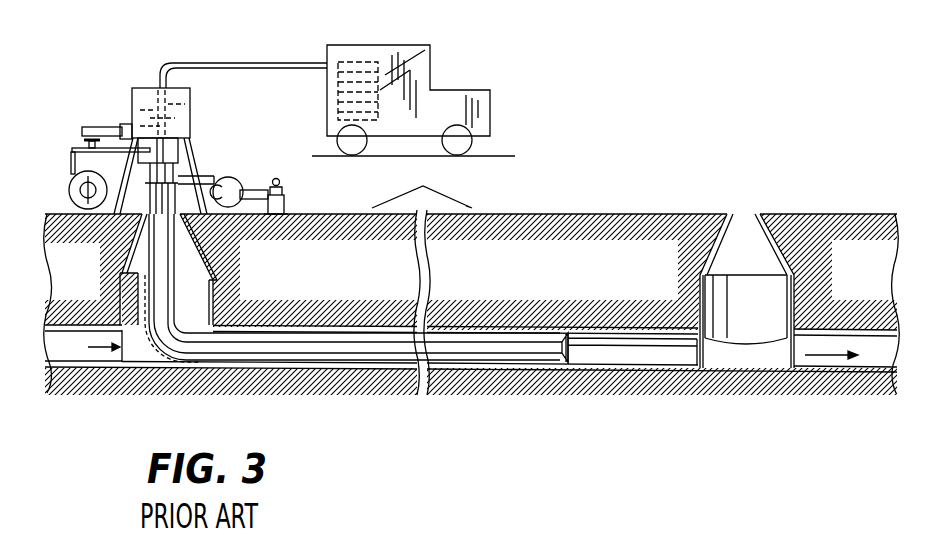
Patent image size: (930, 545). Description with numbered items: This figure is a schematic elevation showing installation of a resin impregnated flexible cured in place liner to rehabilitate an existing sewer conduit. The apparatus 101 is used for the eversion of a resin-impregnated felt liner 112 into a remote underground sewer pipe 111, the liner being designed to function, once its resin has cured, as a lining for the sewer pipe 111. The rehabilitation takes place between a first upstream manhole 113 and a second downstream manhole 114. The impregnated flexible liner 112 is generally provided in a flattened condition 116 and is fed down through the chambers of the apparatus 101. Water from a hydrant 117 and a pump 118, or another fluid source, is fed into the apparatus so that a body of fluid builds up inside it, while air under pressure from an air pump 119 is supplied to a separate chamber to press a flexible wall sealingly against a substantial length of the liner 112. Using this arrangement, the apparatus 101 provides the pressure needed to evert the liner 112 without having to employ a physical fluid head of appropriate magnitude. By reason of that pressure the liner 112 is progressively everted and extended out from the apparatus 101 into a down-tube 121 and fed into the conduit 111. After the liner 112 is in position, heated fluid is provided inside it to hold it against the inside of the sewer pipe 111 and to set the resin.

The apparatus 101 is at (131, 92).
The sewer pipe 111 is at (686, 376).
The resin-impregnated felt liner 112 is at (271, 62).
The first upstream manhole 113 is at (135, 353).
The second downstream manhole 114 is at (780, 364).
The flattened condition 116 is at (453, 24).
The hydrant 117 is at (285, 197).
The pump 118 is at (237, 186).
The air pump 119 is at (92, 216).
The down-tube 121 is at (185, 291).